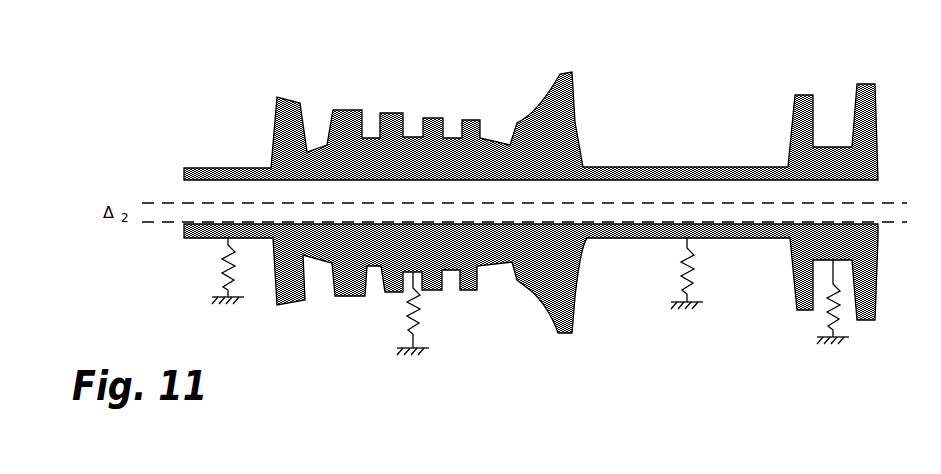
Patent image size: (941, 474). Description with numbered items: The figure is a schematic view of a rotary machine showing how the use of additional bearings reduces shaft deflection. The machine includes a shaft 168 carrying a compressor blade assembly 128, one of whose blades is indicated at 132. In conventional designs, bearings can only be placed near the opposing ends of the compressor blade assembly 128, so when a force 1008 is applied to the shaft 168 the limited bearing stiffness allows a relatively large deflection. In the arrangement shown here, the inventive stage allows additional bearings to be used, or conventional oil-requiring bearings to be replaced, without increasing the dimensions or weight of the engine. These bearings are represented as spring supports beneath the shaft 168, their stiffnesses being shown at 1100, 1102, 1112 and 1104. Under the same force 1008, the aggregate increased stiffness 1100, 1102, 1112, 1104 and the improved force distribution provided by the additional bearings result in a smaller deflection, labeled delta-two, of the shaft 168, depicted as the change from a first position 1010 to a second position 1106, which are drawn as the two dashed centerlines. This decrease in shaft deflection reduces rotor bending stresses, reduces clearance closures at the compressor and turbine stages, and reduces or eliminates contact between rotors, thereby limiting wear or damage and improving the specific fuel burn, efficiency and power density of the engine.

The force 1008 is at (514, 69).
The shaft 168 is at (646, 167).
The first position 1010 is at (143, 203).
The second position 1106 is at (148, 225).
The spring support 1100 is at (216, 293).
The stiffness 1102 is at (421, 346).
The stiffness 1112 is at (698, 296).
The stiffness 1104 is at (842, 337).
The blade 132 is at (284, 306).
The compressor blade assembly 128 is at (357, 318).